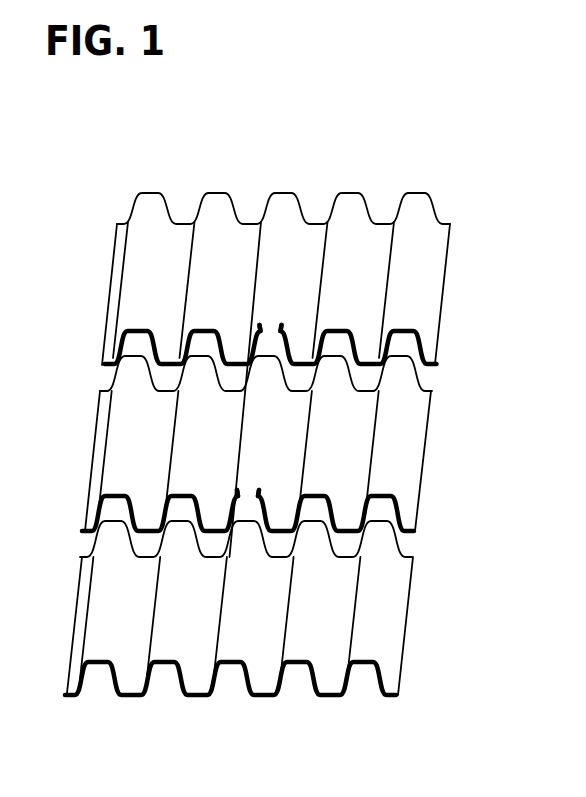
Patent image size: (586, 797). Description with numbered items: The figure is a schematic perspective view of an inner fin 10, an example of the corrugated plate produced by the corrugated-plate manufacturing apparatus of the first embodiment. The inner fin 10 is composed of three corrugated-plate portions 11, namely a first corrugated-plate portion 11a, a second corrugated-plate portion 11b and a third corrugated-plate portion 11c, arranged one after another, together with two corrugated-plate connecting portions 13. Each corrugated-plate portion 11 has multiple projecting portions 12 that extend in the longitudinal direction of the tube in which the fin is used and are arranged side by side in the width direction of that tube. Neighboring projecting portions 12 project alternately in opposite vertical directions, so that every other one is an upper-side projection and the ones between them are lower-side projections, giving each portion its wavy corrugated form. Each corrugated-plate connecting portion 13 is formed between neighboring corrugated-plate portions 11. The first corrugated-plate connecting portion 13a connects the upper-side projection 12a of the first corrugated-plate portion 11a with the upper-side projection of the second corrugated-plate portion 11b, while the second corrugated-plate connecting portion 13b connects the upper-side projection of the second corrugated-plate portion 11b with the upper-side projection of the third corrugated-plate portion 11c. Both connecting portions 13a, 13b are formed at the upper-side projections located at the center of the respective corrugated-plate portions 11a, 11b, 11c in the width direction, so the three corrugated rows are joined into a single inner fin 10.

The inner fin 10 is at (452, 207).
The corrugated-plate portion 11 is at (318, 458).
The first corrugated-plate portion 11a is at (427, 316).
The second corrugated-plate portion 11b is at (407, 482).
The third corrugated-plate portion 11c is at (388, 653).
The projecting portion 12 is at (257, 425).
The upper-side projection 12a is at (281, 157).
The corrugated-plate connecting portion 13 is at (403, 386).
The first corrugated-plate connecting portion 13a is at (267, 343).
The second corrugated-plate connecting portion 13b is at (248, 510).